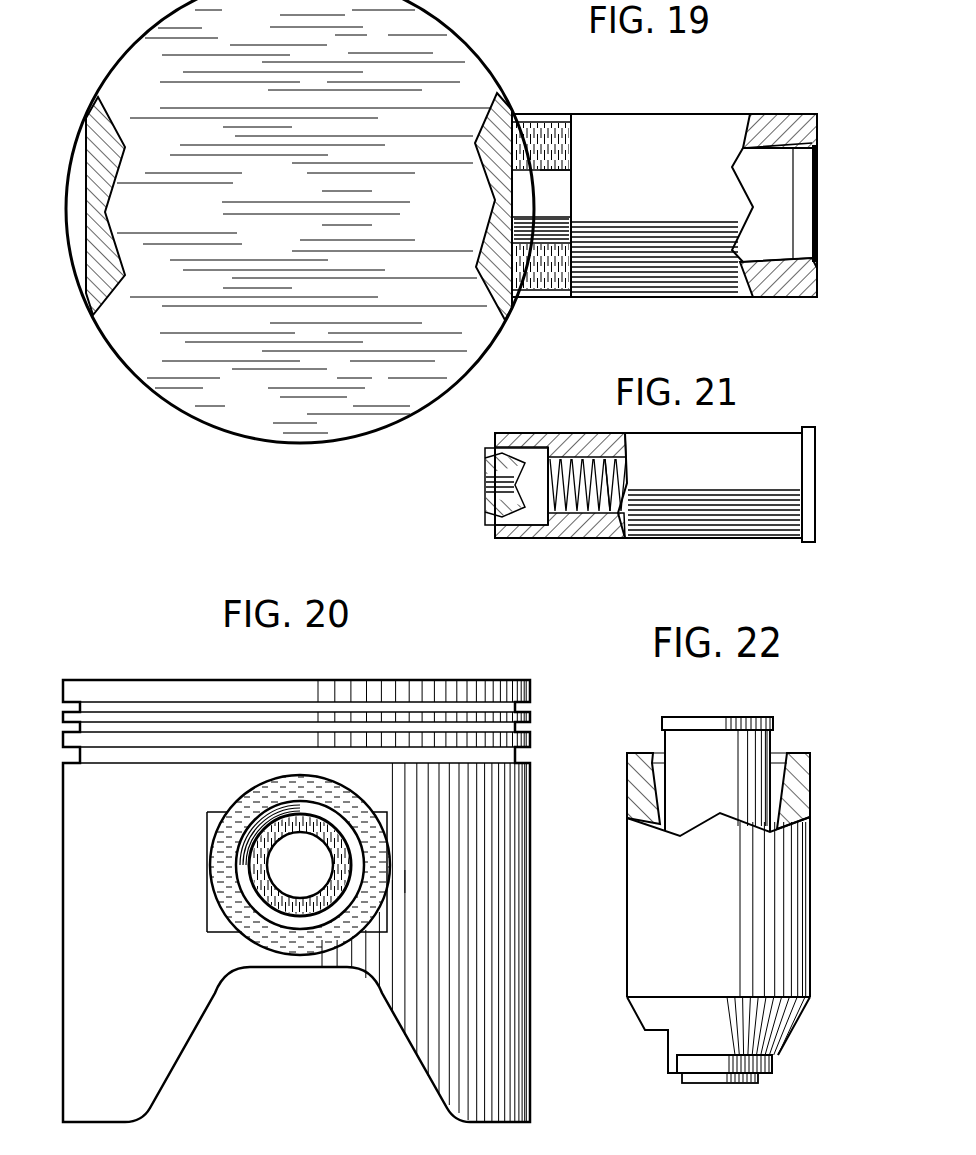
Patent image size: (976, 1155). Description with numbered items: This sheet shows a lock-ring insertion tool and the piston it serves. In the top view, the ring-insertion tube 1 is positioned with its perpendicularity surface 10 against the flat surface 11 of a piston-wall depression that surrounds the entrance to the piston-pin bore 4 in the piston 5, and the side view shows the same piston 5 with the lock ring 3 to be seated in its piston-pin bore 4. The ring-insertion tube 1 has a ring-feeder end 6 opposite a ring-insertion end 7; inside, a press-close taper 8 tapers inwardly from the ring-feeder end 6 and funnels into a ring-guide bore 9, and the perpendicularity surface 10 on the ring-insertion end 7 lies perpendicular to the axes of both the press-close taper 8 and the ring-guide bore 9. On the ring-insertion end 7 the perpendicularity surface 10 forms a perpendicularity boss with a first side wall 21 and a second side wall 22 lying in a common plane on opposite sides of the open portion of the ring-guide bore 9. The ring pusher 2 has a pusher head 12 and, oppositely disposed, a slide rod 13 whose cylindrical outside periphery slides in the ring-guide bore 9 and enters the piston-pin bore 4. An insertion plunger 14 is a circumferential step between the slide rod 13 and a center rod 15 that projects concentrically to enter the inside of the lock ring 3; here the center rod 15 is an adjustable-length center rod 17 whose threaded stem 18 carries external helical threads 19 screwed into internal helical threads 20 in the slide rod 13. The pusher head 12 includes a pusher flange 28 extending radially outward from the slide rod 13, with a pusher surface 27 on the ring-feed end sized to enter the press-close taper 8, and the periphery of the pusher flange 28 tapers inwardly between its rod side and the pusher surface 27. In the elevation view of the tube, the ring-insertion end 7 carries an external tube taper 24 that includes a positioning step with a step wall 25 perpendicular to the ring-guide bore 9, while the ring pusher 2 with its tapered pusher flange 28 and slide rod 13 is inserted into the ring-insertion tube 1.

In FIG. 19, the ring-insertion tube 1 is at (650, 208).
In FIG. 20, the ring-insertion tube 1 is at (237, 798).
In FIG. 22, the ring-insertion tube 1 is at (725, 920).
In FIG. 19, the ring pusher 2 is at (498, 201).
In FIG. 21, the ring pusher 2 is at (456, 485).
In FIG. 22, the ring pusher 2 is at (717, 707).
In FIG. 20, the lock ring 3 is at (298, 908).
In FIG. 20, the piston-pin bore 4 is at (307, 873).
In FIG. 19, the piston 5 is at (283, 200).
In FIG. 20, the piston 5 is at (160, 645).
In FIG. 19, the ring-feeder end 6 is at (817, 297).
In FIG. 22, the ring-feeder end 6 is at (628, 755).
In FIG. 19, the ring-insertion end 7 is at (580, 300).
In FIG. 22, the ring-insertion end 7 is at (627, 1003).
In FIG. 19, the press-close taper 8 is at (782, 263).
In FIG. 20, the press-close taper 8 is at (243, 857).
In FIG. 22, the press-close taper 8 is at (650, 783).
In FIG. 19, the ring-guide bore 9 is at (555, 168).
In FIG. 20, the ring-guide bore 9 is at (243, 892).
In FIG. 22, the ring-guide bore 9 is at (720, 1057).
In FIG. 19, the perpendicularity surface 10 is at (105, 277).
In FIG. 22, the perpendicularity surface 10 is at (773, 1057).
In FIG. 20, the flat surface 11 is at (213, 818).
In FIG. 19, the pusher head 12 is at (803, 162).
In FIG. 19, the slide rod 13 is at (555, 208).
In FIG. 21, the slide rod 13 is at (710, 490).
In FIG. 22, the slide rod 13 is at (729, 787).
In FIG. 21, the insertion plunger 14 is at (495, 532).
In FIG. 22, the insertion plunger 14 is at (770, 1073).
In FIG. 22, the center rod 15 is at (703, 1085).
In FIG. 21, the adjustable-length center rod 17 is at (495, 457).
In FIG. 21, the threaded stem 18 is at (555, 475).
In FIG. 21, the external helical threads 19 is at (562, 517).
In FIG. 21, the internal helical threads 20 is at (615, 520).
In FIG. 19, the first side wall 21 is at (537, 153).
In FIG. 19, the second side wall 22 is at (533, 277).
In FIG. 22, the tube taper 24 is at (727, 1038).
In FIG. 22, the step wall 25 is at (657, 1027).
In FIG. 19, the pusher surface 27 is at (817, 195).
In FIG. 21, the pusher surface 27 is at (815, 500).
In FIG. 21, the pusher flange 28 is at (808, 487).
In FIG. 22, the pusher flange 28 is at (773, 722).